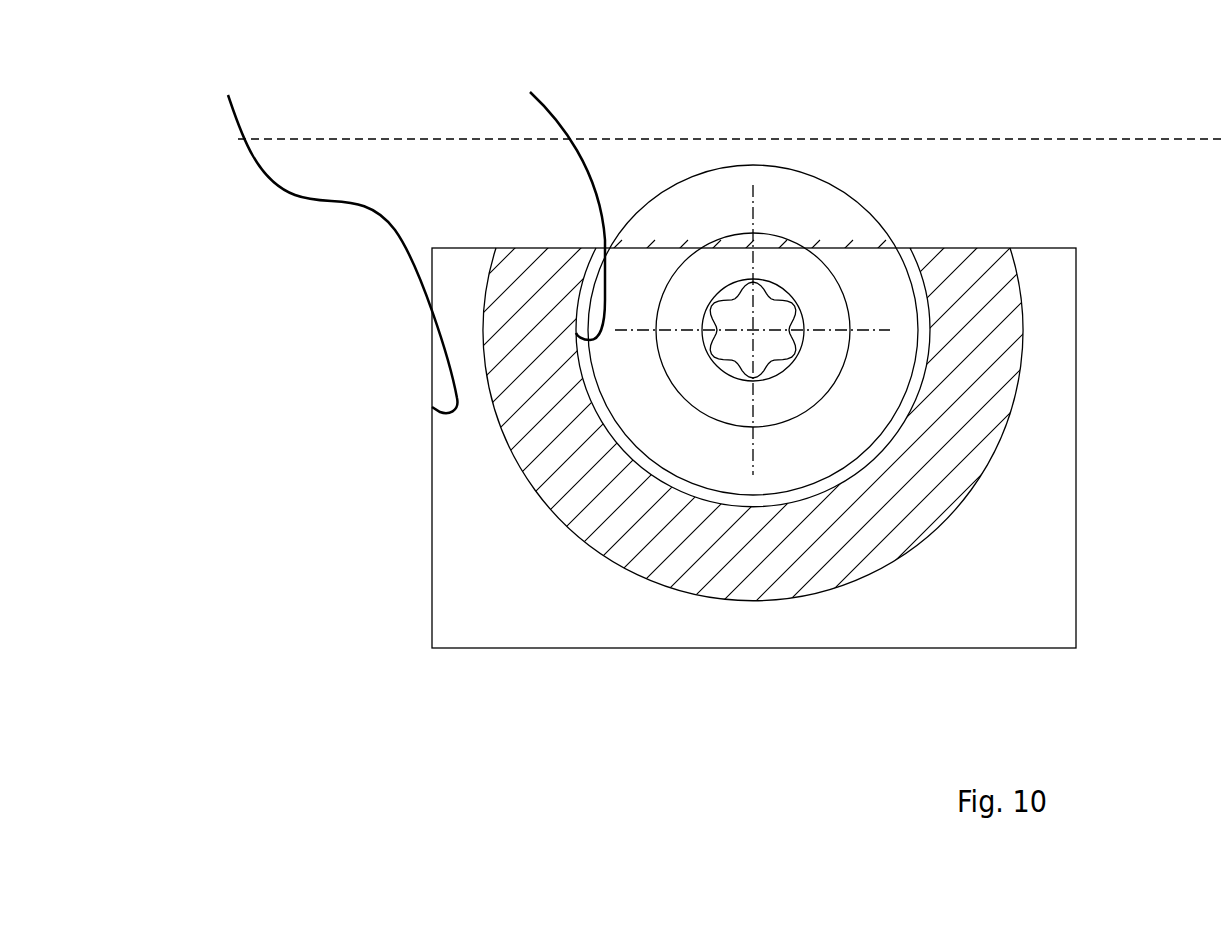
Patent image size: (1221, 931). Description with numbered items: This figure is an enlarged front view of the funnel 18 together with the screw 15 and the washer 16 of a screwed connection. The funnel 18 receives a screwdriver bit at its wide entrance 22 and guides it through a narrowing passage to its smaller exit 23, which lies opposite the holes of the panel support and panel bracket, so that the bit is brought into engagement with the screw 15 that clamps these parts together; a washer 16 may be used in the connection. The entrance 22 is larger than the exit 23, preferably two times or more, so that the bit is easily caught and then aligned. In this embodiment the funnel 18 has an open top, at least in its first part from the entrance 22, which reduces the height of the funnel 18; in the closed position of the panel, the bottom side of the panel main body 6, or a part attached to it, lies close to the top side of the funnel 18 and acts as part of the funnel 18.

The panel main body 6 is at (362, 139).
The screw 15 is at (805, 288).
The washer 16 is at (689, 222).
The funnel 18 is at (997, 335).
The entrance 22 is at (334, 230).
The exit 23 is at (556, 195).